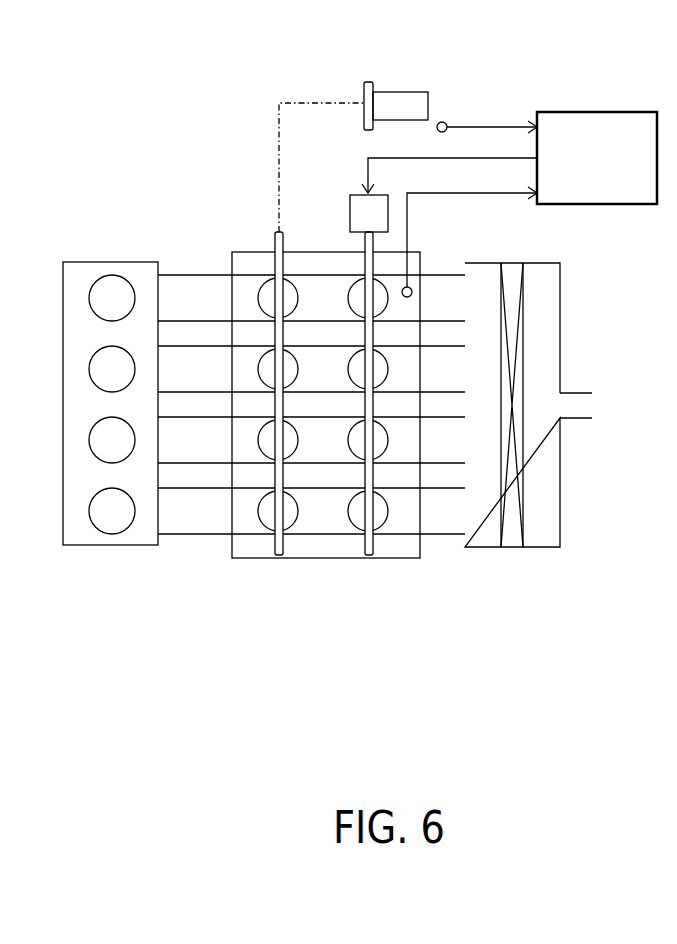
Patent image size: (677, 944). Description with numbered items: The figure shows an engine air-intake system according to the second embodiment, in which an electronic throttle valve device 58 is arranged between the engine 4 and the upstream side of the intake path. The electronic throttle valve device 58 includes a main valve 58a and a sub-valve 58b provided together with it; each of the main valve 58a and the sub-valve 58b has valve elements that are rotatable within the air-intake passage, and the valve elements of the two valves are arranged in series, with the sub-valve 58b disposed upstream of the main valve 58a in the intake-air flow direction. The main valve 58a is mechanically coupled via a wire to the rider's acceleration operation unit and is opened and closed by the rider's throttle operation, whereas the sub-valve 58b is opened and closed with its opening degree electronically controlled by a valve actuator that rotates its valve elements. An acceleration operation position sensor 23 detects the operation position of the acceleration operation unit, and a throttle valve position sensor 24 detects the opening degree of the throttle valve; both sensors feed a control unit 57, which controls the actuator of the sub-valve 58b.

The engine 4 is at (85, 547).
The acceleration operation position sensor 23 is at (447, 123).
The throttle valve position sensor 24 is at (411, 288).
The ECU (electronic control unit) 57 is at (596, 112).
The electronic throttle valve device 58 is at (238, 596).
The main valve 58a is at (279, 558).
The sub-valve 58b is at (369, 558).